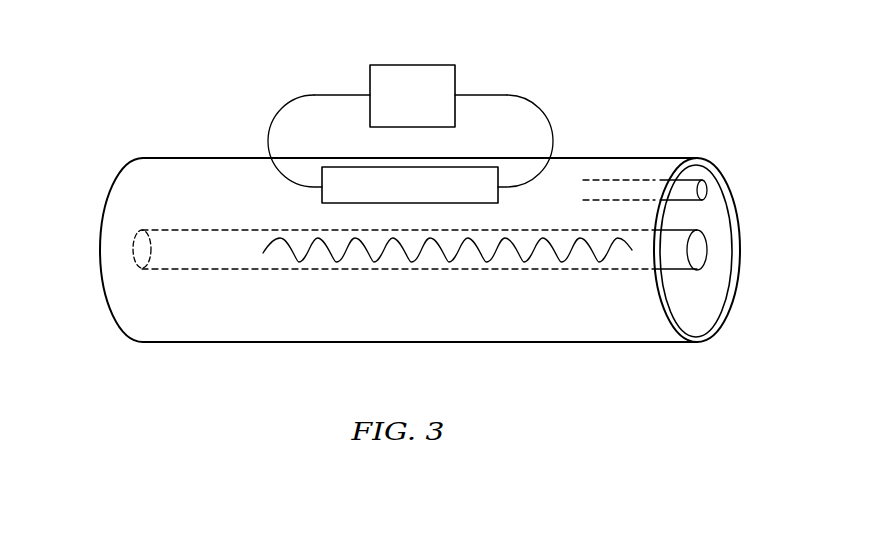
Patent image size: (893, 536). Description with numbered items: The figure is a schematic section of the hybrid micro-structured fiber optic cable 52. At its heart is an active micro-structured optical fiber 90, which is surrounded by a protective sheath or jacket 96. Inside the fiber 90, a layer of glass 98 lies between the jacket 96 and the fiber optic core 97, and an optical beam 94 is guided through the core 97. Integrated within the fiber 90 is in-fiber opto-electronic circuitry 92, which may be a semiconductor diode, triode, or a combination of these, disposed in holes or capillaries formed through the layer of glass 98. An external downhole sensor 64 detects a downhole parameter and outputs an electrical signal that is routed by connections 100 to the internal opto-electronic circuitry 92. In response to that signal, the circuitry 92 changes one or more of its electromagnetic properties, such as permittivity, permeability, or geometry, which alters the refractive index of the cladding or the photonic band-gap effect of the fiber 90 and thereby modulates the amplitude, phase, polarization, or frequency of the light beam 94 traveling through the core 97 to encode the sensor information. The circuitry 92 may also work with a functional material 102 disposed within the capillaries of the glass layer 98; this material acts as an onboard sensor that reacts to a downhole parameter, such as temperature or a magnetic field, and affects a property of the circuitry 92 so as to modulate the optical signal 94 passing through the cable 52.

The micro-structured fiber optic cable 52 is at (122, 66).
The external downhole sensor 64 is at (440, 64).
The active micro-structured optical fiber 90 is at (616, 146).
The opto-electronic circuitry 92 is at (320, 192).
The optical beam 94 is at (386, 264).
The protective sheath 96 is at (193, 157).
The core 97 is at (512, 271).
The layer of glass 98 is at (715, 217).
The connections 100 is at (320, 94).
The functional material 102 is at (652, 178).